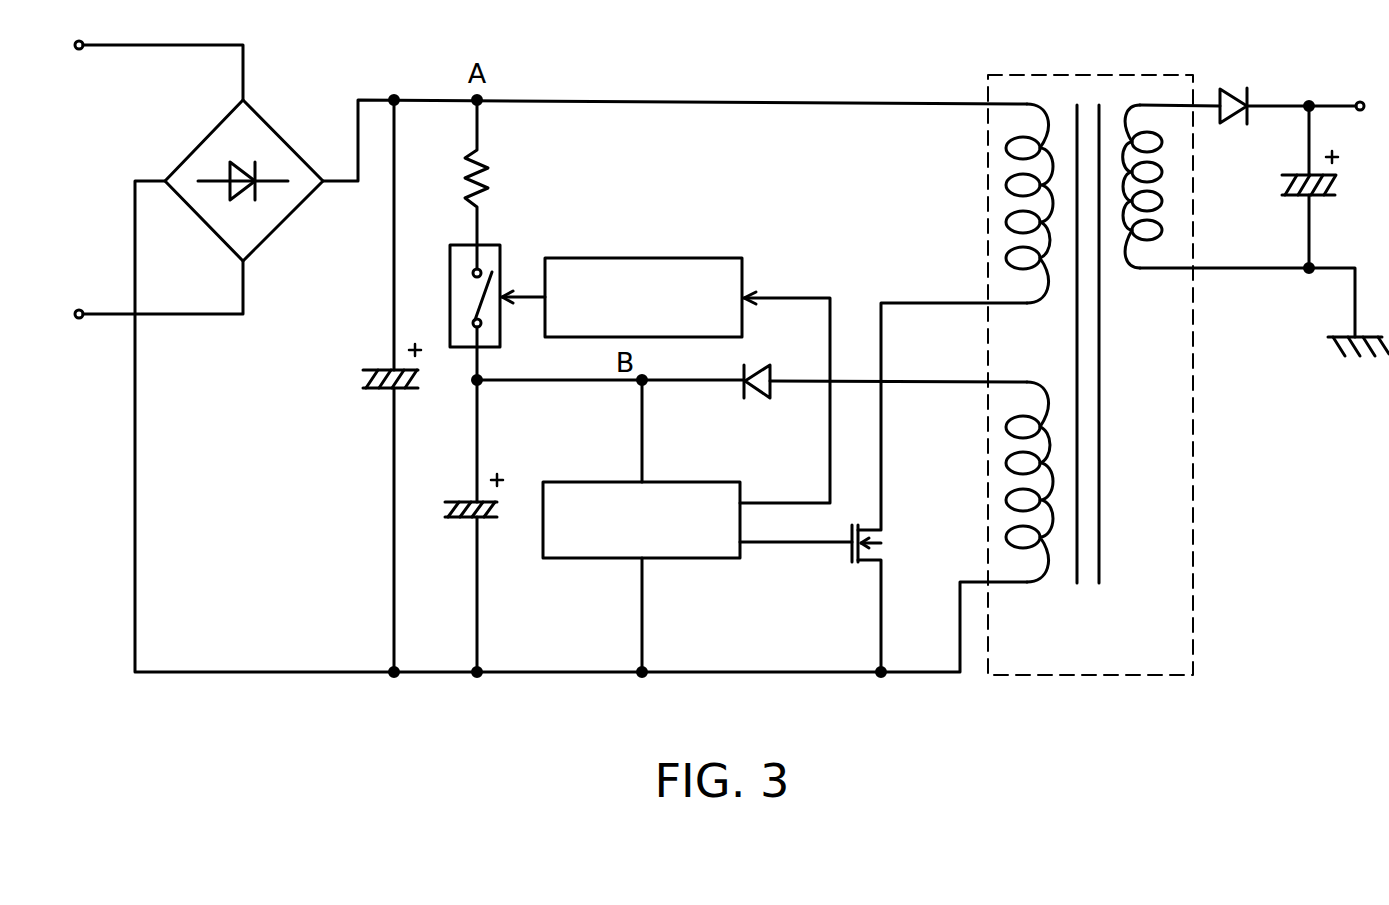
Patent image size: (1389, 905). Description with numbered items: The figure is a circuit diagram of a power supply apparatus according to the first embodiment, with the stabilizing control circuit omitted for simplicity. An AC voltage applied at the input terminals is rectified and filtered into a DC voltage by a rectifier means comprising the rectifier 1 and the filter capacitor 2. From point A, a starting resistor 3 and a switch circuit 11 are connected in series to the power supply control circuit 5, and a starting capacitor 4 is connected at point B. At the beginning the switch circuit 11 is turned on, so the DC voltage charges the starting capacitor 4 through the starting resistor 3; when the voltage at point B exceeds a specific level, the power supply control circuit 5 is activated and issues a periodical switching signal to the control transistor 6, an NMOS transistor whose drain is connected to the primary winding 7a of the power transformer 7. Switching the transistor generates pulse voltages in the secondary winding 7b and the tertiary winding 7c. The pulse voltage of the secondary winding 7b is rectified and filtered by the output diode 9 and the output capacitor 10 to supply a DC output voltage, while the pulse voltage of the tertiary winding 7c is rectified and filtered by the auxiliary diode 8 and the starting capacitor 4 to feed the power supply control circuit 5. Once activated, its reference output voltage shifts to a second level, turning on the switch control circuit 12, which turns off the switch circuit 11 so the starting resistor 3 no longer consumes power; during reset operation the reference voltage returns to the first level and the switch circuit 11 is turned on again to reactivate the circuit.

The rectifier 1 is at (272, 127).
The filter capacitor 2 is at (370, 390).
The starting resistor 3 is at (490, 167).
The starting capacitor 4 is at (455, 517).
The power supply control circuit 5 is at (590, 482).
The control transistor 6 is at (875, 563).
The power transformer 7 is at (1090, 342).
The primary winding 7a is at (1005, 305).
The secondary winding 7b is at (1165, 268).
The tertiary winding 7c is at (1000, 583).
The auxiliary diode 8 is at (755, 397).
The output diode 9 is at (1230, 92).
The output capacitor 10 is at (1323, 196).
The switch circuit 11 is at (460, 245).
The switch control circuit 12 is at (722, 258).